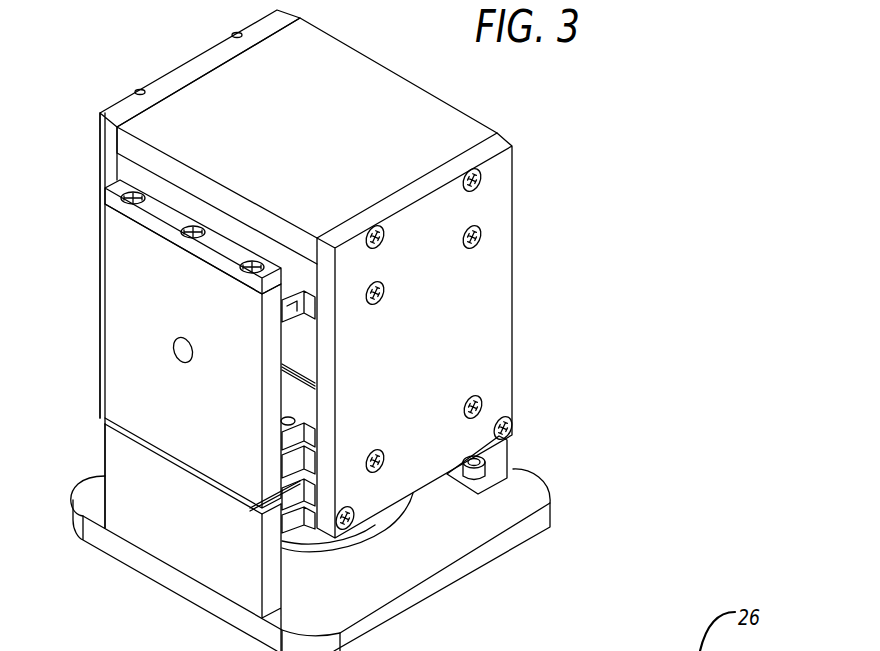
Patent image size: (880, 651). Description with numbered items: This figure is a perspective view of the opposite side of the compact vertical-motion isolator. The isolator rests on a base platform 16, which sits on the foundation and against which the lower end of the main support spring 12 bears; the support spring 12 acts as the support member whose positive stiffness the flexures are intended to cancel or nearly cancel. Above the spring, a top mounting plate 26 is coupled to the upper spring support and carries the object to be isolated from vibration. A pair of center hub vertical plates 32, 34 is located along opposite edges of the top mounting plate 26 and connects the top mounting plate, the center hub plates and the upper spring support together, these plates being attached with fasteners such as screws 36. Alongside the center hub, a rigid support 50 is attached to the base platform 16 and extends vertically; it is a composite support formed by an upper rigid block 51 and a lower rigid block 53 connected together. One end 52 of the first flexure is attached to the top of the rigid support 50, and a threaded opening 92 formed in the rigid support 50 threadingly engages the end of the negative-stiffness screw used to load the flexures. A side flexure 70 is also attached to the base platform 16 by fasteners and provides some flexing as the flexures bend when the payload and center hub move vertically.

The main support spring 12 is at (318, 542).
The base platform 16 is at (453, 543).
The top mounting plate 26 is at (448, 146).
The center hub vertical plate 32 is at (485, 273).
The center hub vertical plate 34 is at (103, 158).
The screws 36 is at (508, 420).
The rigid support 50 is at (99, 297).
The upper rigid block 51 is at (166, 359).
The end of first flexure 52 is at (160, 214).
The lower rigid block 53 is at (197, 538).
The side flexure 70 is at (510, 453).
The threaded opening 92 is at (183, 352).